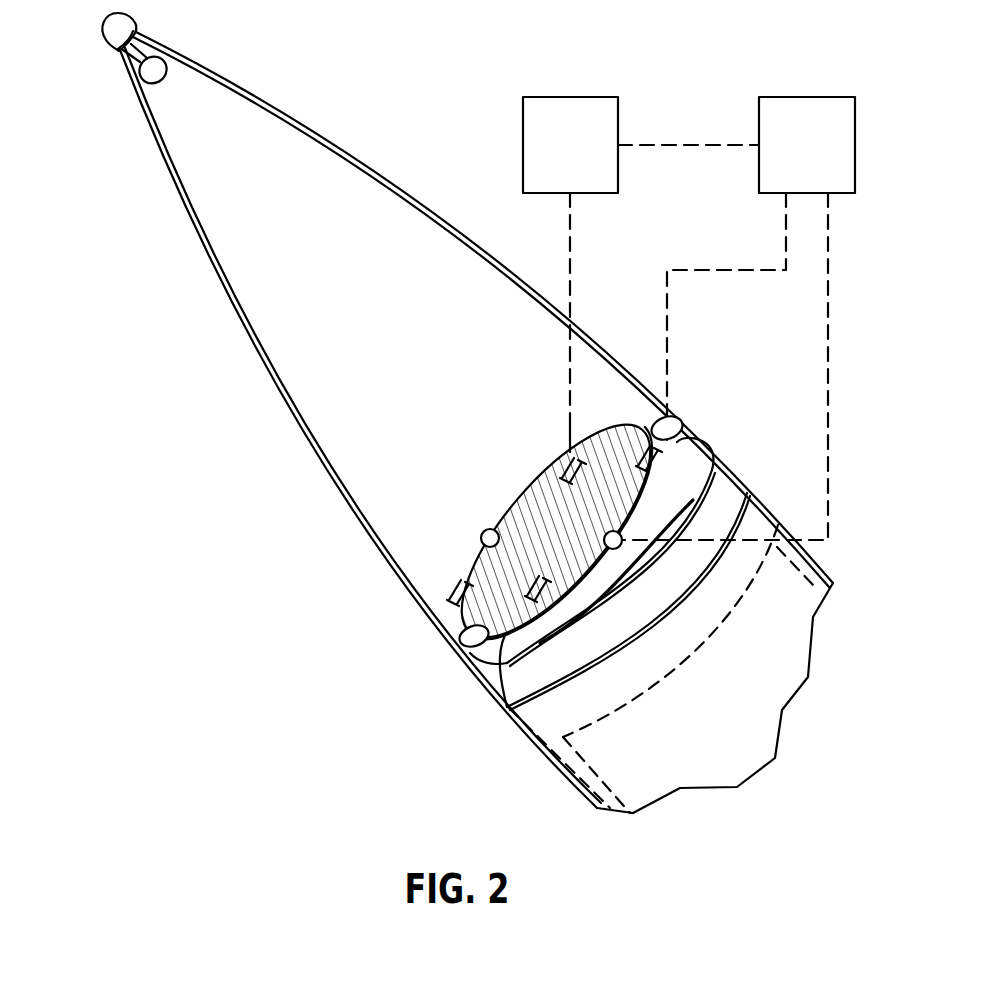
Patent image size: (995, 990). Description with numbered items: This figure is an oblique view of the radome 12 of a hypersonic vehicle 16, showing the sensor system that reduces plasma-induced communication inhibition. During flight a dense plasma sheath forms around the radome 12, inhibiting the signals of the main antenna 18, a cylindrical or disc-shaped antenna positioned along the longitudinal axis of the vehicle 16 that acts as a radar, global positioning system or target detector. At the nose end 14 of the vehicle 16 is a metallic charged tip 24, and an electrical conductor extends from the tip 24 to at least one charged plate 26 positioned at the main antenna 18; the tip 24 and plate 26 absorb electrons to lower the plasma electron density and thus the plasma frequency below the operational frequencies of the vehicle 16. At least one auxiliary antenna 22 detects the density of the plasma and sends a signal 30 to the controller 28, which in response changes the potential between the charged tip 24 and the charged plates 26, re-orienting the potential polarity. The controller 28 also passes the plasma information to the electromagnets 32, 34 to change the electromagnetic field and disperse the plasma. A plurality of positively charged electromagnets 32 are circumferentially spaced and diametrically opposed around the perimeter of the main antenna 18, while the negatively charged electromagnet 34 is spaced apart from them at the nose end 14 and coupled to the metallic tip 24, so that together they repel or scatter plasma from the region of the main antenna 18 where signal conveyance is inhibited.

The radome 12 is at (210, 267).
The nose end 14 is at (180, 188).
The vehicle 16 is at (757, 687).
The main antenna 18 is at (460, 615).
The auxiliary antenna 22 is at (500, 690).
The metallic charged tip 24 is at (120, 33).
The charged plate 26 is at (478, 637).
The controller 28 is at (808, 120).
The signal 30 is at (572, 120).
The positively charged electromagnet 32 is at (487, 538).
The negatively charged electromagnet 34 is at (157, 75).